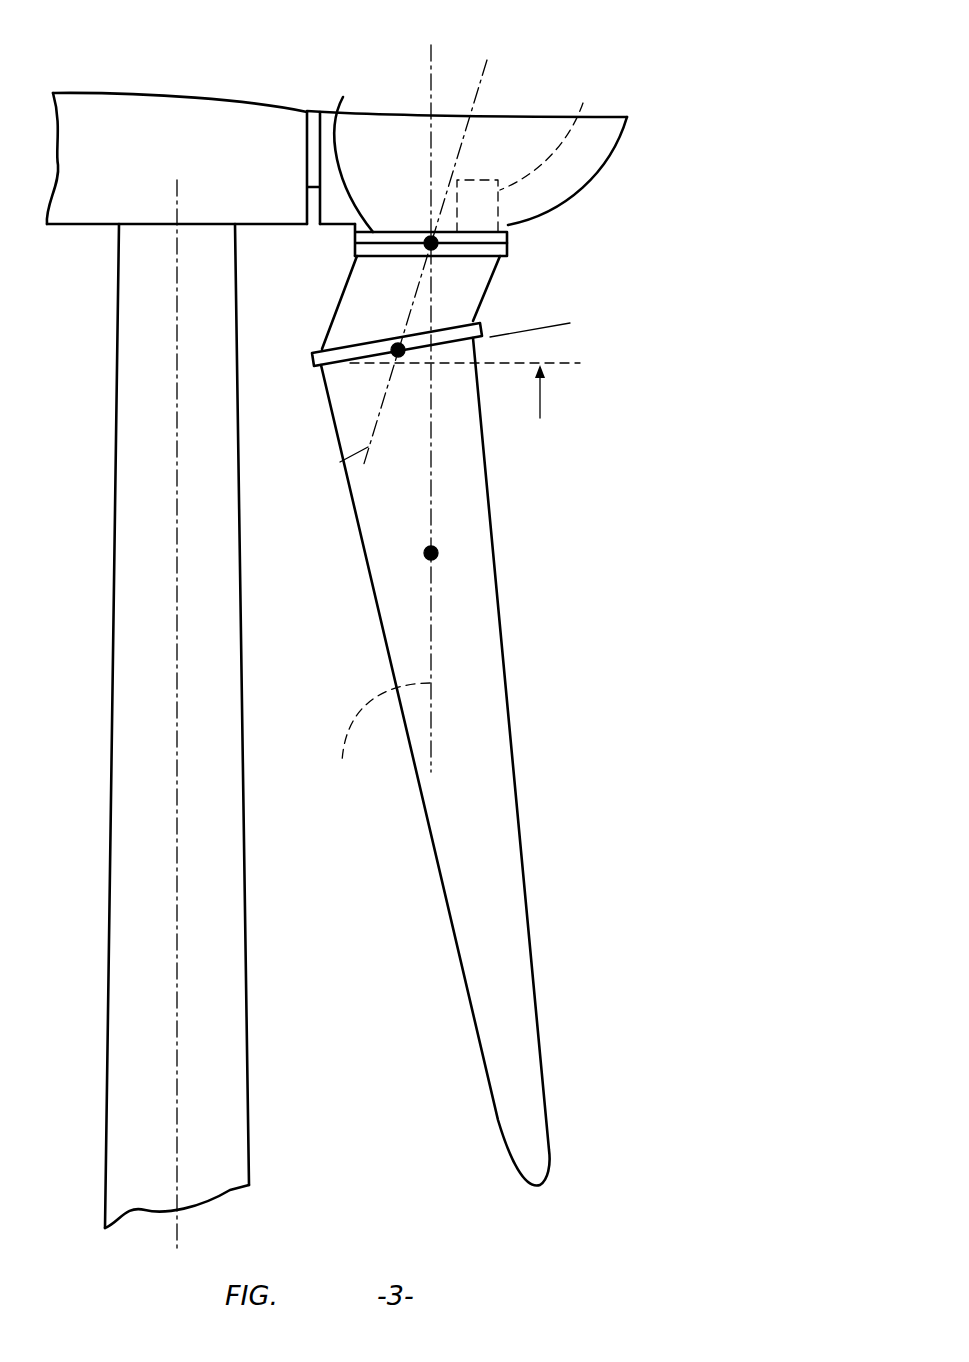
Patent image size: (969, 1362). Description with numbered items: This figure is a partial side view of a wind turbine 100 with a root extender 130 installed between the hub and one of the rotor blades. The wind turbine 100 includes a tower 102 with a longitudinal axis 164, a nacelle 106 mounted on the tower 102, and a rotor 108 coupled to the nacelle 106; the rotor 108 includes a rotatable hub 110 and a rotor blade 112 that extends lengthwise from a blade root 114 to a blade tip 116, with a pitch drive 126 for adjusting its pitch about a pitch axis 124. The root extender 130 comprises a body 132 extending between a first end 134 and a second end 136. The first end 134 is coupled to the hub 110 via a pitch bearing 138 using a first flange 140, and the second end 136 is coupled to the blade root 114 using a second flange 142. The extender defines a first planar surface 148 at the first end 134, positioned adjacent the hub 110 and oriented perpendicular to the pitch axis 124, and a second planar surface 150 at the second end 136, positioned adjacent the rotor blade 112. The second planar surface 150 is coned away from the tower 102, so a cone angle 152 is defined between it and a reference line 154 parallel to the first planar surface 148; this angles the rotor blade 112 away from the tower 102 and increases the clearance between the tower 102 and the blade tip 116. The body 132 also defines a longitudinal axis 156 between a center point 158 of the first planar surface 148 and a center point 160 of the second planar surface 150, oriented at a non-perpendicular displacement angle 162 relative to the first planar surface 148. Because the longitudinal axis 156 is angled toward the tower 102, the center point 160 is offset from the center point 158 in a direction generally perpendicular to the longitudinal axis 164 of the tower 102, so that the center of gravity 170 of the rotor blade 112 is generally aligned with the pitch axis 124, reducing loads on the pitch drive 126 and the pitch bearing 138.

The wind turbine 100 is at (677, 45).
The tower 102 is at (135, 785).
The nacelle 106 is at (155, 173).
The rotor 108 is at (517, 147).
The hub 110 is at (603, 178).
The rotor blade 112 is at (454, 784).
The blade root 114 is at (330, 407).
The blade tip 116 is at (537, 1187).
The pitch axis 124 is at (376, 743).
The pitch drive 126 is at (583, 103).
The root extender 130 is at (445, 290).
The body 132 is at (358, 302).
The first end 134 is at (493, 279).
The second end 136 is at (366, 363).
The pitch bearing 138 is at (508, 238).
The first flange 140 is at (508, 252).
The second flange 142 is at (488, 334).
The first planar surface 148 is at (425, 65).
The second planar surface 150 is at (282, 378).
The cone angle 152 is at (542, 343).
The reference line 154 is at (562, 367).
The longitudinal axis 156 is at (345, 458).
The center point 158 is at (425, 240).
The center point 160 is at (400, 356).
The displacement angle 162 is at (528, 93).
The longitudinal axis 164 is at (177, 688).
The center of gravity 170 is at (436, 550).